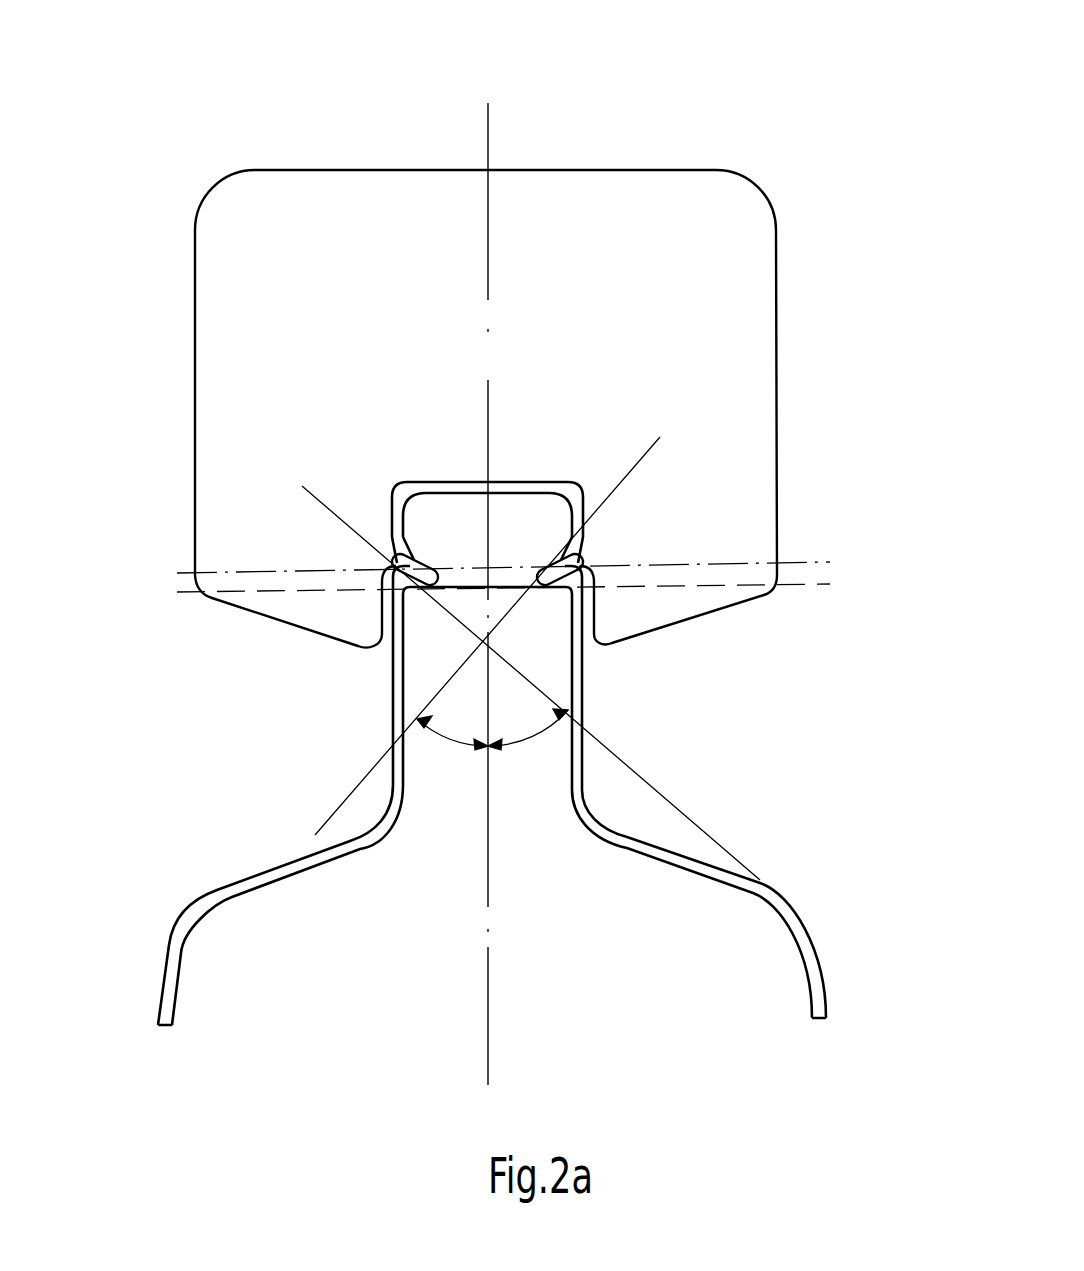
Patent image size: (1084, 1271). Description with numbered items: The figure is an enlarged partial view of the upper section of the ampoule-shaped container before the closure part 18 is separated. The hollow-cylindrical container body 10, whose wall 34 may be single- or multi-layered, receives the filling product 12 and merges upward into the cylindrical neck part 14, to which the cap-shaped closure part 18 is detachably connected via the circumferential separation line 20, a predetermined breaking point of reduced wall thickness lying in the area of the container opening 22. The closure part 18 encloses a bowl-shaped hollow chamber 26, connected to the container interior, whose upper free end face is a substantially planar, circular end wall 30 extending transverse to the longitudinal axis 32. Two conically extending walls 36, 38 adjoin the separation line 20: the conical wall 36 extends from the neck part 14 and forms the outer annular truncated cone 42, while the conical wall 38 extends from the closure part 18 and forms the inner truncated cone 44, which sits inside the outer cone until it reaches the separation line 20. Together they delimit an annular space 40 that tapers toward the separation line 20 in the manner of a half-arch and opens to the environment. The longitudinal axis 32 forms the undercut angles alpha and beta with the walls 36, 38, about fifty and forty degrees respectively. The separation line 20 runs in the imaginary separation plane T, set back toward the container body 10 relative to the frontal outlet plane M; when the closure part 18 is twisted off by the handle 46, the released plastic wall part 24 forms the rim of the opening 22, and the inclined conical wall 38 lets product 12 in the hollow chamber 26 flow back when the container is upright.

The container body 10 is at (497, 795).
The filling product 12 is at (628, 1003).
The neck part 14 is at (580, 712).
The closure part 18 is at (530, 409).
The separation line 20 is at (535, 514).
The container opening 22 is at (499, 567).
The plastic wall part 24 is at (541, 585).
The hollow chamber 26 is at (527, 515).
The end wall 30 is at (503, 402).
The longitudinal axis 32 is at (492, 142).
The wall 34 is at (818, 968).
The conical wall 36 is at (298, 614).
The conical wall 38 is at (724, 538).
The annular space 40 is at (437, 557).
The truncated cone 42 is at (407, 593).
The truncated cone 44 is at (560, 569).
The handle 46 is at (682, 247).
The outlet plane M is at (808, 566).
The separation plane T is at (808, 590).